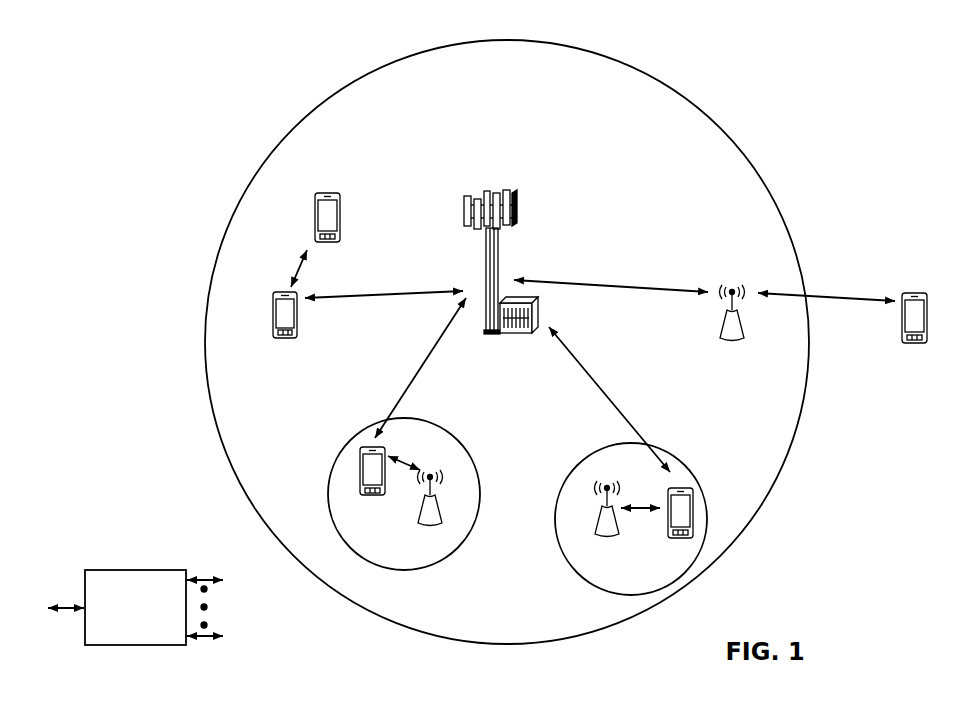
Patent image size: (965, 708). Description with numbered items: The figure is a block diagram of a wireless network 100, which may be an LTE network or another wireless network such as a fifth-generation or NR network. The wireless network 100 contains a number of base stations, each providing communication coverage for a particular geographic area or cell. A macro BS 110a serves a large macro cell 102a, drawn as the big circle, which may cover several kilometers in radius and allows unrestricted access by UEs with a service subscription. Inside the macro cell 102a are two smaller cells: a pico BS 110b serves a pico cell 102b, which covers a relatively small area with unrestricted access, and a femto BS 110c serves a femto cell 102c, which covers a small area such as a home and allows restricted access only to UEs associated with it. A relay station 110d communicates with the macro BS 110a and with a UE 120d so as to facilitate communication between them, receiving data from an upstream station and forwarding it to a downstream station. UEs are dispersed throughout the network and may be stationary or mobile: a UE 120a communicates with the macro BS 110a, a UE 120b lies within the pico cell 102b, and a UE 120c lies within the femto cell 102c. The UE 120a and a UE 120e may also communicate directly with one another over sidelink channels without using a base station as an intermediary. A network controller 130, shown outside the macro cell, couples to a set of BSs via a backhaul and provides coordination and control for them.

The wireless network 100 is at (124, 38).
The macro cell 102a is at (712, 121).
The pico cell 102b is at (471, 447).
The femto cell 102c is at (583, 460).
The macro BS 110a is at (494, 190).
The pico BS 110b is at (440, 518).
The femto BS 110c is at (596, 532).
The relay station 110d is at (732, 286).
The UE 120a is at (273, 312).
The UE 120b is at (364, 496).
The UE 120c is at (672, 539).
The UE 120d is at (920, 293).
The UE 120e is at (315, 206).
The network controller 130 is at (134, 570).